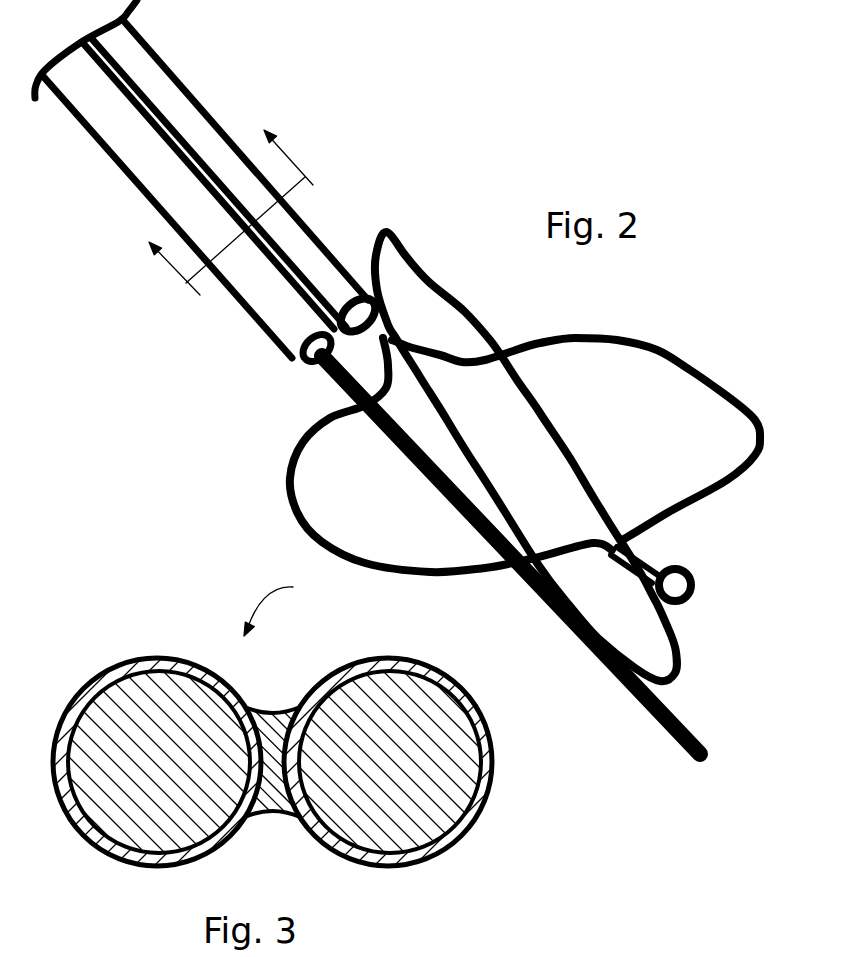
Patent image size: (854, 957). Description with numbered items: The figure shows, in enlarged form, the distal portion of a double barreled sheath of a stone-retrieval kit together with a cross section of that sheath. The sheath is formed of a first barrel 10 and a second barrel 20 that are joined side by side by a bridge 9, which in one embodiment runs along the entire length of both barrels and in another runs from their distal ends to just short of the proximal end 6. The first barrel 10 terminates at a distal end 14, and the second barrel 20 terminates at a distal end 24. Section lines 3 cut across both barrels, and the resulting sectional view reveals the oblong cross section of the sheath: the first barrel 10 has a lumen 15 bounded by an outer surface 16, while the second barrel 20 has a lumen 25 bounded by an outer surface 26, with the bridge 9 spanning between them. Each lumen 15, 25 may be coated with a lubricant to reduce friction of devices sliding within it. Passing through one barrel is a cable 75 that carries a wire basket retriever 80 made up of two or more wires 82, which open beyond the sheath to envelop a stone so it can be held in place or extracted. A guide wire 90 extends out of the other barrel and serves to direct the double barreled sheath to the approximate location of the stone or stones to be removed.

In FIG. 2, the section lines 3 is at (239, 219).
In FIG. 3, the proximal end 6 is at (277, 603).
In FIG. 3, the bridge 9 is at (270, 718).
In FIG. 2, the first barrel 10 is at (125, 145).
In FIG. 3, the first barrel 10 is at (88, 680).
In FIG. 2, the distal end 14 is at (157, 187).
In FIG. 3, the lumen 15 is at (130, 773).
In FIG. 3, the outer surface 16 is at (90, 843).
In FIG. 2, the second barrel 20 is at (172, 103).
In FIG. 3, the second barrel 20 is at (437, 663).
In FIG. 2, the distal end 24 is at (205, 137).
In FIG. 3, the lumen 25 is at (460, 773).
In FIG. 3, the outer surface 26 is at (453, 833).
In FIG. 2, the cable 75 is at (348, 300).
In FIG. 2, the wire basket retriever 80 is at (487, 322).
In FIG. 2, the wires 82 is at (662, 348).
In FIG. 2, the guide wire 90 is at (577, 633).